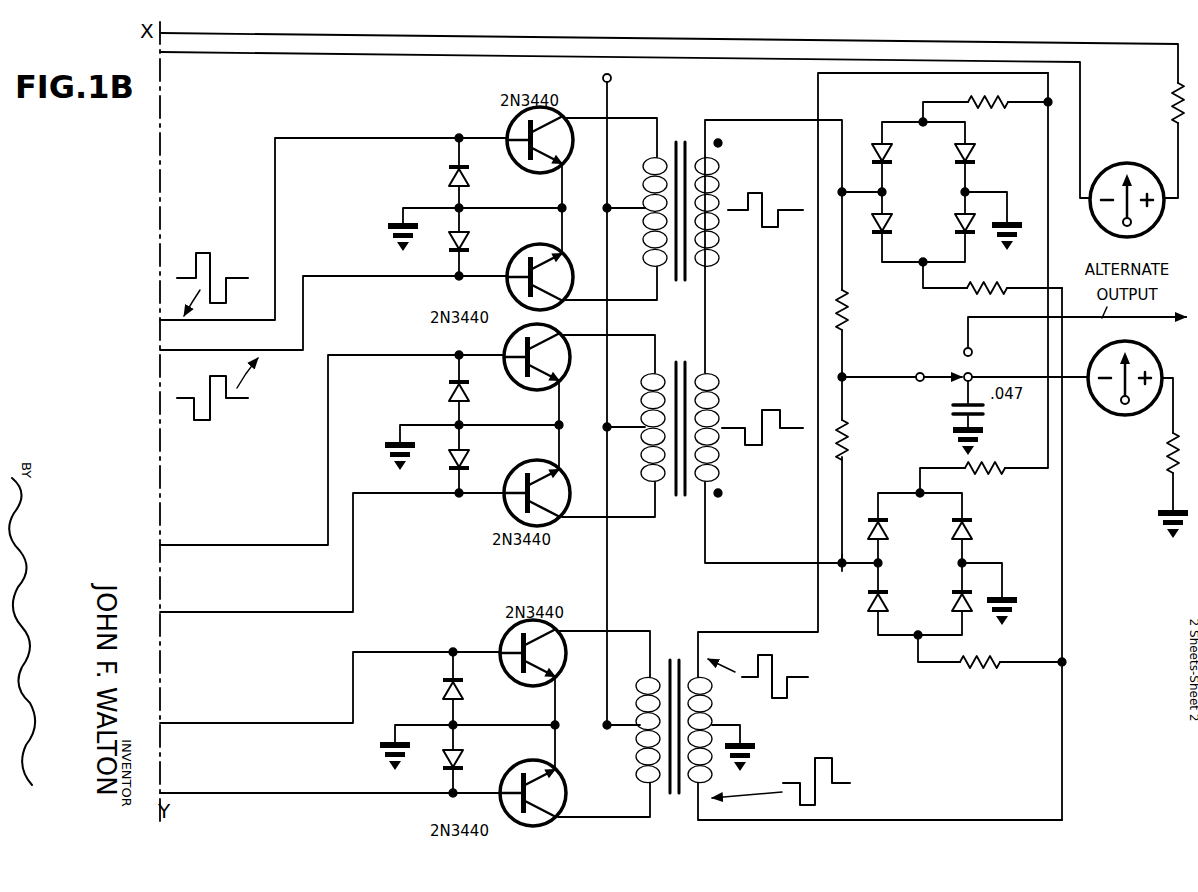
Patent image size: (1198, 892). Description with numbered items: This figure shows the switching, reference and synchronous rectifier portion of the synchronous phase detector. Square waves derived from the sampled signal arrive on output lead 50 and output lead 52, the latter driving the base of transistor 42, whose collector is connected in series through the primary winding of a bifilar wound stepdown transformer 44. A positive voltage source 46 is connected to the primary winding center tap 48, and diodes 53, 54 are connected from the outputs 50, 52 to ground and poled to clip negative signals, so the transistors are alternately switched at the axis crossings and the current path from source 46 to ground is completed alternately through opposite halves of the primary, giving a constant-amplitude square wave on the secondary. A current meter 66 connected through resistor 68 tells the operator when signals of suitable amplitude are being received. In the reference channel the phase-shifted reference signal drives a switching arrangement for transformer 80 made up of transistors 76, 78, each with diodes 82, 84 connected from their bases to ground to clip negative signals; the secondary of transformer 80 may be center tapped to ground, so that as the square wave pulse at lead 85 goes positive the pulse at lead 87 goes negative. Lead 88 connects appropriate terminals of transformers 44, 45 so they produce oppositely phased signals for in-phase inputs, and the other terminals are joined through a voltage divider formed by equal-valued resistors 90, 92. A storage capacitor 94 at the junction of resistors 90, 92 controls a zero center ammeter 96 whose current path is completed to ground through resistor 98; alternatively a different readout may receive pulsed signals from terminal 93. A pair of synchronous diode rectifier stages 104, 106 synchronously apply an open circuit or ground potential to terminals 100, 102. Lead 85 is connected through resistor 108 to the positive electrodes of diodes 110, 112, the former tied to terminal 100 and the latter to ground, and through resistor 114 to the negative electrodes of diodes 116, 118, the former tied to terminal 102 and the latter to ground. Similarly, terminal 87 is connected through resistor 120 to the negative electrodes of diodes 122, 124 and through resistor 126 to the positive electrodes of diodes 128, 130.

The transistor 42 is at (560, 262).
The bifilar wound stepdown transformer 44 is at (682, 130).
The transformer 45 is at (680, 503).
The positive voltage source 46 is at (602, 78).
The primary winding center tap 48 is at (623, 207).
The output lead 50 is at (355, 137).
The output lead 52 is at (352, 275).
The diode 53 is at (465, 244).
The diode 54 is at (449, 178).
The current meter 66 is at (1115, 166).
The resistor 68 is at (1173, 95).
The transistor 76 is at (505, 640).
The transistor 78 is at (566, 796).
The transformer 80 is at (673, 645).
The diode 82 is at (442, 690).
The diode 84 is at (463, 758).
The lead 85 is at (778, 632).
The lead 87 is at (945, 818).
The lead 88 is at (708, 302).
The resistor 90 is at (849, 303).
The resistor 92 is at (852, 447).
The terminal 93 is at (846, 376).
The storage capacitor 94 is at (962, 385).
The zero center ammeter 96 is at (1152, 366).
The resistor 98 is at (1165, 460).
The terminal 100 is at (840, 190).
The terminal 102 is at (842, 568).
The synchronous diode rectifier stage 104 is at (941, 187).
The synchronous diode rectifier stage 106 is at (928, 569).
The resistor 108 is at (972, 100).
The diode 110 is at (882, 142).
The diode 112 is at (973, 155).
The resistor 114 is at (985, 470).
The diode 116 is at (876, 528).
The diode 118 is at (968, 553).
The resistor 120 is at (980, 292).
The diode 122 is at (880, 240).
The diode 124 is at (958, 222).
The resistor 126 is at (962, 670).
The diode 128 is at (873, 615).
The diode 130 is at (958, 596).